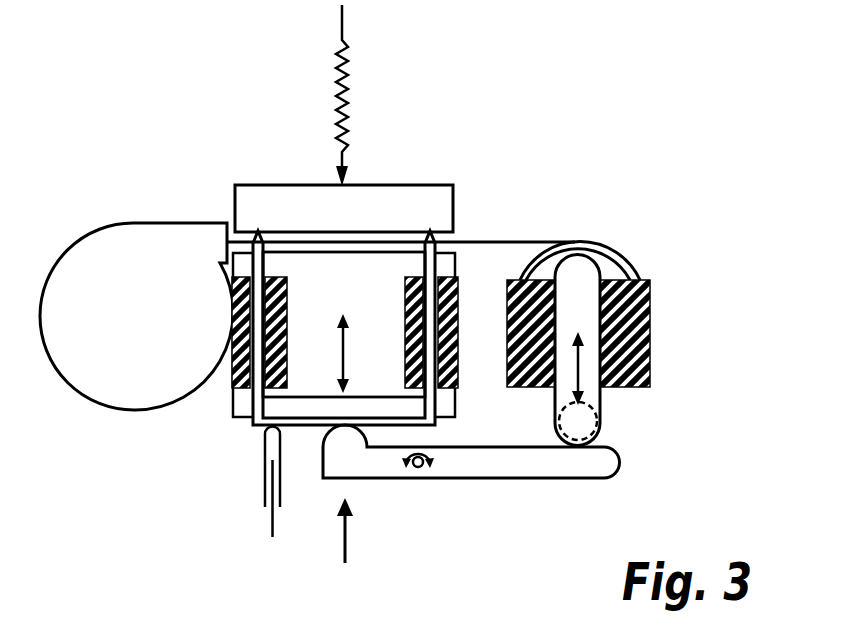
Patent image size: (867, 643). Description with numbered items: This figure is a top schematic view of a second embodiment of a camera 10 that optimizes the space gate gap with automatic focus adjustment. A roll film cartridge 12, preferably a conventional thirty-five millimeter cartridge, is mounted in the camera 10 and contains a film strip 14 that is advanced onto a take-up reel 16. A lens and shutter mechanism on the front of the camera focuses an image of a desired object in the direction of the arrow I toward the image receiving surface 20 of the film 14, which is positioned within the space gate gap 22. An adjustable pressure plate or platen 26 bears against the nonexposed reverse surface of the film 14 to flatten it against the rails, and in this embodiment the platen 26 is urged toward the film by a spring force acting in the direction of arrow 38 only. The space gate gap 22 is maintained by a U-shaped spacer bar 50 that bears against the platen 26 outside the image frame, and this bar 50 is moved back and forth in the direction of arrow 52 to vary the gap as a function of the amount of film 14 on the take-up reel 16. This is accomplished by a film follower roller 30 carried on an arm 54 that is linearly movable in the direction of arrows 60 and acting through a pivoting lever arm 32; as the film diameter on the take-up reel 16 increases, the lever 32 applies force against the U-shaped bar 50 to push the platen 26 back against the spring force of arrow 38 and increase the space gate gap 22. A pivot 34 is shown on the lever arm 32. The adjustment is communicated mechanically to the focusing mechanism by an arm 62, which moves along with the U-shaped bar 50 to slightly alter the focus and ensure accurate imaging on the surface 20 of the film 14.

The camera 10 is at (590, 52).
The roll film cartridge 12 is at (141, 330).
The film strip 14 is at (623, 251).
The take-up reel 16 is at (705, 310).
The image receiving surface 20 is at (487, 252).
The space gate gap 22 is at (367, 236).
The platen 26 is at (322, 224).
The film follower roller 30 is at (624, 413).
The pivoting lever arm 32 is at (613, 481).
The pivot pin 34 is at (431, 469).
The arrow 38 is at (402, 79).
The U-shaped spacer bar 50 is at (276, 410).
The arrow 52 is at (392, 364).
The arm 54 is at (650, 362).
The arrows 60 is at (594, 328).
The arm 62 is at (266, 453).
The arrow I is at (388, 565).